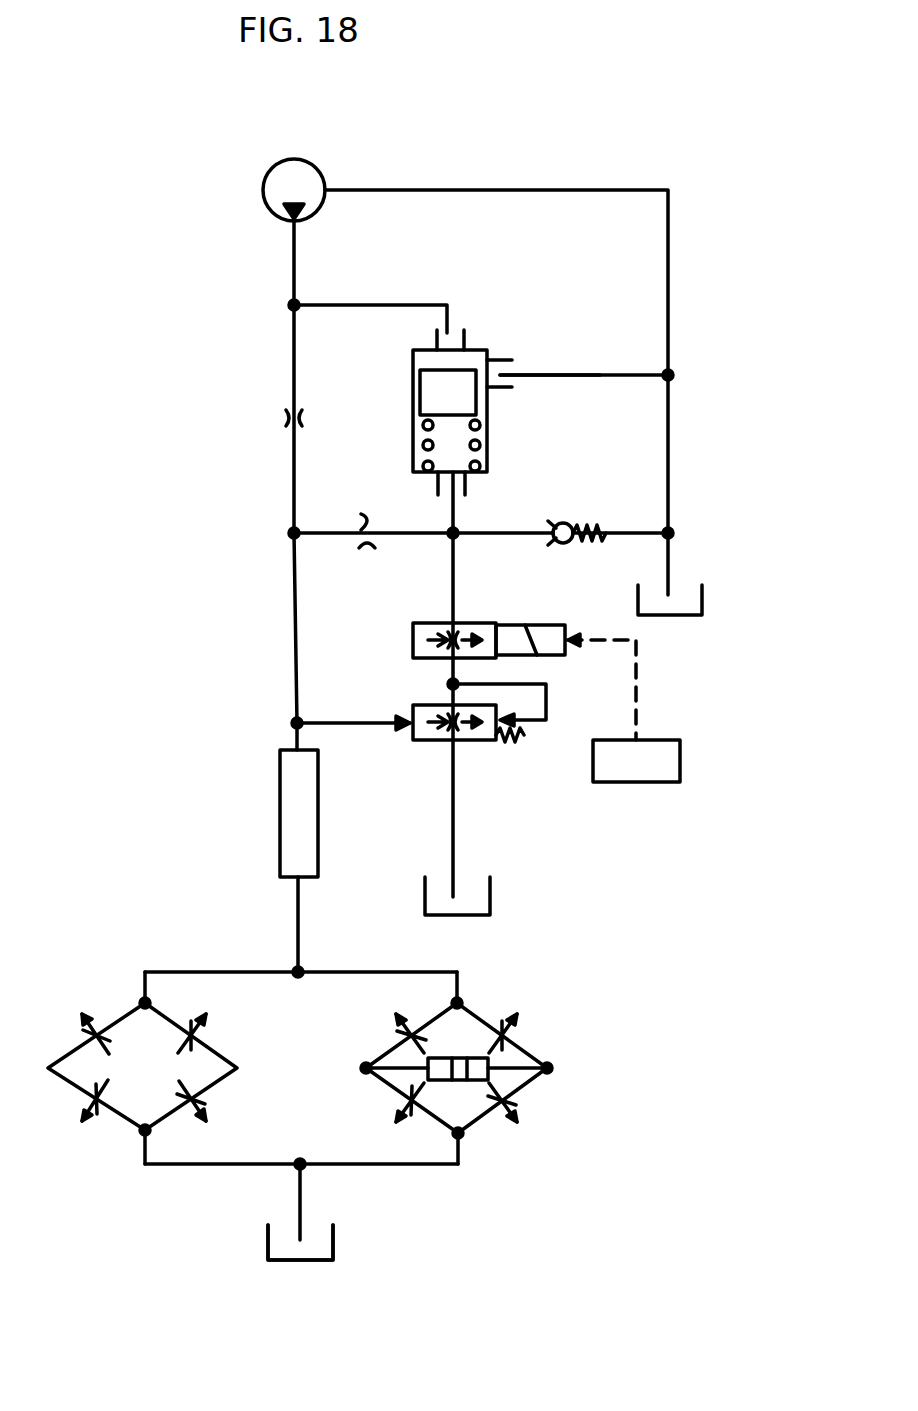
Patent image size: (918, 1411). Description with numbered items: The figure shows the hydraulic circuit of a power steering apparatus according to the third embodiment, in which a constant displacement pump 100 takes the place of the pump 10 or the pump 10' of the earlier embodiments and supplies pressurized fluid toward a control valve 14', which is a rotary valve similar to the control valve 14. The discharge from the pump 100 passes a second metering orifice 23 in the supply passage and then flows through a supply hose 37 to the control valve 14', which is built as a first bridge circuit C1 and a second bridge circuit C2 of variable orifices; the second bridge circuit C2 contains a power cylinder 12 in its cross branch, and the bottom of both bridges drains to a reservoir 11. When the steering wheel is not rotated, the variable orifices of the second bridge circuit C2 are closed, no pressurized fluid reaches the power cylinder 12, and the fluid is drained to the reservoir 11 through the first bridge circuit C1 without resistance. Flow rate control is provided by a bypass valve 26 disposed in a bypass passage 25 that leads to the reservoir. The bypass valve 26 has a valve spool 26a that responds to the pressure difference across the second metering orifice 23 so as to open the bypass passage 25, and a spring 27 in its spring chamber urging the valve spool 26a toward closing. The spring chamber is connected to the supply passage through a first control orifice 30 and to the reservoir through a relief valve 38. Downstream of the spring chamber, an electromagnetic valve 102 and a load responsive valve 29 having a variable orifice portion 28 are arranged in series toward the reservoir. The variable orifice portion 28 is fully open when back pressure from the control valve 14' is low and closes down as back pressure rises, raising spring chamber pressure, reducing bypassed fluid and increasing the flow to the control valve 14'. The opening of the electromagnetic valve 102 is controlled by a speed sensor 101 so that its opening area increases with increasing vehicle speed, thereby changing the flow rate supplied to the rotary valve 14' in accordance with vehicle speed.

The pump 10 is at (481, 581).
The pump 10' is at (137, 234).
The pump 100 is at (263, 190).
The second metering orifice 23 is at (284, 418).
The bypass valve 26 is at (402, 394).
The valve spool 26a is at (468, 400).
The spring 27 is at (482, 440).
The bypass passage 25 is at (560, 373).
The first control orifice 30 is at (364, 524).
The relief valve 38 is at (596, 528).
The electromagnetic valve 102 is at (490, 622).
The speed sensor 101 is at (640, 783).
The variable orifice portion 28 is at (480, 742).
The load responsive valve 29 is at (420, 742).
The supply hose 37 is at (295, 798).
The control valve 14 is at (301, 1068).
The control valve 14' is at (288, 1001).
The first bridge circuit C1 is at (112, 1002).
The second bridge circuit C2 is at (495, 1002).
The power cylinder 12 is at (472, 1081).
The reservoir 11 is at (300, 1262).